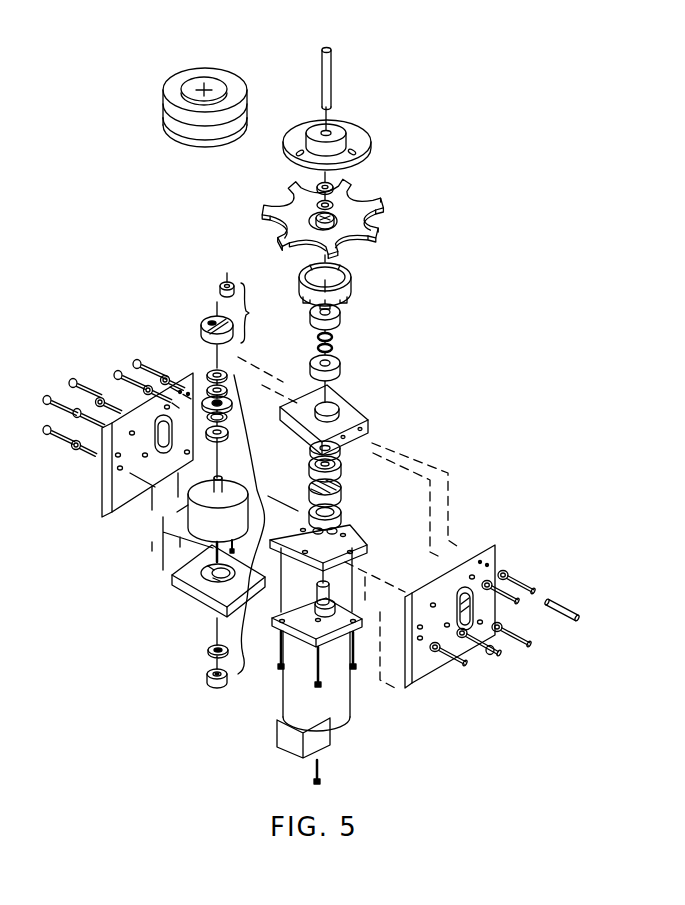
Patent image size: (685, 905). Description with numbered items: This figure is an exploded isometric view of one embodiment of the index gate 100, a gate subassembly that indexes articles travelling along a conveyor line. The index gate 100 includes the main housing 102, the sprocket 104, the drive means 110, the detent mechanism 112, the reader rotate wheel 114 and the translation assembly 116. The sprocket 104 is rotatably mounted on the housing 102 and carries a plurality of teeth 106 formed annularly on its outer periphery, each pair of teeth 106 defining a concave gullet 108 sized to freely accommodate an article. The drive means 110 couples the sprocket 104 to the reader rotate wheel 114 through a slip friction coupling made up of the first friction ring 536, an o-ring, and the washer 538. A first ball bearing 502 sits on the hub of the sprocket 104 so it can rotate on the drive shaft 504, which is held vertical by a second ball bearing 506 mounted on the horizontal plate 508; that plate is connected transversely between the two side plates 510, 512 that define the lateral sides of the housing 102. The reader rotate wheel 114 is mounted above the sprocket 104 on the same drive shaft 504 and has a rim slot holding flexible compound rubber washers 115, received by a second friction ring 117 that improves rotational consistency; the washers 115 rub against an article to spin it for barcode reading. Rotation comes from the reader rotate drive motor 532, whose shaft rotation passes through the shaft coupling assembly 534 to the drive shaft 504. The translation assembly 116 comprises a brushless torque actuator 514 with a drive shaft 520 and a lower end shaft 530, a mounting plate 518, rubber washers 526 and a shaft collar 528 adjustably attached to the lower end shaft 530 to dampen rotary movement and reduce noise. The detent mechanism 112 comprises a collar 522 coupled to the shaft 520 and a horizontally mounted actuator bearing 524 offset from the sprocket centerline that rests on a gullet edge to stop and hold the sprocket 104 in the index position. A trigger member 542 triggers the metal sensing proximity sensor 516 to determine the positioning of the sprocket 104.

The index gate 100 is at (528, 250).
The main housing 102 is at (495, 545).
The sprocket 104 is at (375, 193).
The teeth 106 is at (383, 210).
The gullet 108 is at (378, 220).
The drive means 110 is at (326, 44).
The detent mechanism 112 is at (262, 313).
The reader rotate wheel 114 is at (357, 127).
The flexible compound rubber washers 115 is at (163, 122).
The translation assembly 116 is at (258, 522).
The second friction ring 117 is at (247, 104).
The first ball bearing 502 is at (340, 312).
The drive shaft 504 is at (333, 73).
The second ball bearing 506 is at (342, 362).
The horizontal plate 508 is at (363, 412).
The side plate 510 is at (104, 505).
The side plate 512 is at (437, 677).
The brushless torque actuator 514 is at (182, 541).
The metal sensing proximity sensor 516 is at (552, 600).
The mounting plate 518 is at (195, 603).
The drive shaft 520 is at (180, 508).
The collar 522 is at (208, 320).
The actuator bearing 524 is at (218, 281).
The rubber washers 526 is at (207, 650).
The shaft collar 528 is at (208, 683).
The lower end shaft 530 is at (176, 561).
The reader rotate drive motor 532 is at (353, 708).
The shaft coupling assembly 534 is at (335, 512).
The first friction ring 536 is at (316, 205).
The washer 538 is at (316, 186).
The trigger member 542 is at (303, 277).